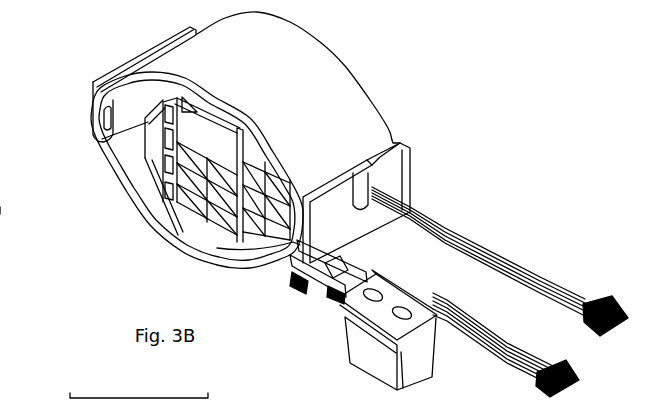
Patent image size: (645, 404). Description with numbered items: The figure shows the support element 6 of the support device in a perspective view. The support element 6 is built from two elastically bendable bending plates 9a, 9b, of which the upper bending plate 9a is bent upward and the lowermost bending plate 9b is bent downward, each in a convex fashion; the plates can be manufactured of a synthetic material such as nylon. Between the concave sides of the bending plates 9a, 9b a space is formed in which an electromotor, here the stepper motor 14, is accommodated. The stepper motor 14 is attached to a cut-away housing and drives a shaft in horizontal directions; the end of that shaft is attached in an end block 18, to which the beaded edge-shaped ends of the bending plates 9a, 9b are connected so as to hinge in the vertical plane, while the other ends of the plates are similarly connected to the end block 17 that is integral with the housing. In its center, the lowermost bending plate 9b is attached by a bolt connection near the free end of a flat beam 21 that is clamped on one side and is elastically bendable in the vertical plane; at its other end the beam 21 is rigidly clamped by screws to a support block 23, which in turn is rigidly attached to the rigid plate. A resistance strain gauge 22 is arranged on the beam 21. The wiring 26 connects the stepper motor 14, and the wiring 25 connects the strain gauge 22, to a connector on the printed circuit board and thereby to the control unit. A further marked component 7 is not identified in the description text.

The support element 6 is at (80, 219).
The housing base 7 is at (142, 397).
The bending plate 9a is at (294, 76).
The bending plate 9b is at (125, 168).
The stepper motor 14 is at (228, 165).
The end block 17 is at (397, 170).
The end block 18 is at (95, 114).
The beam 21 is at (357, 270).
The resistance strain gauge 22 is at (299, 259).
The support block 23 is at (367, 350).
The wiring 25 is at (490, 343).
The wiring 26 is at (503, 260).